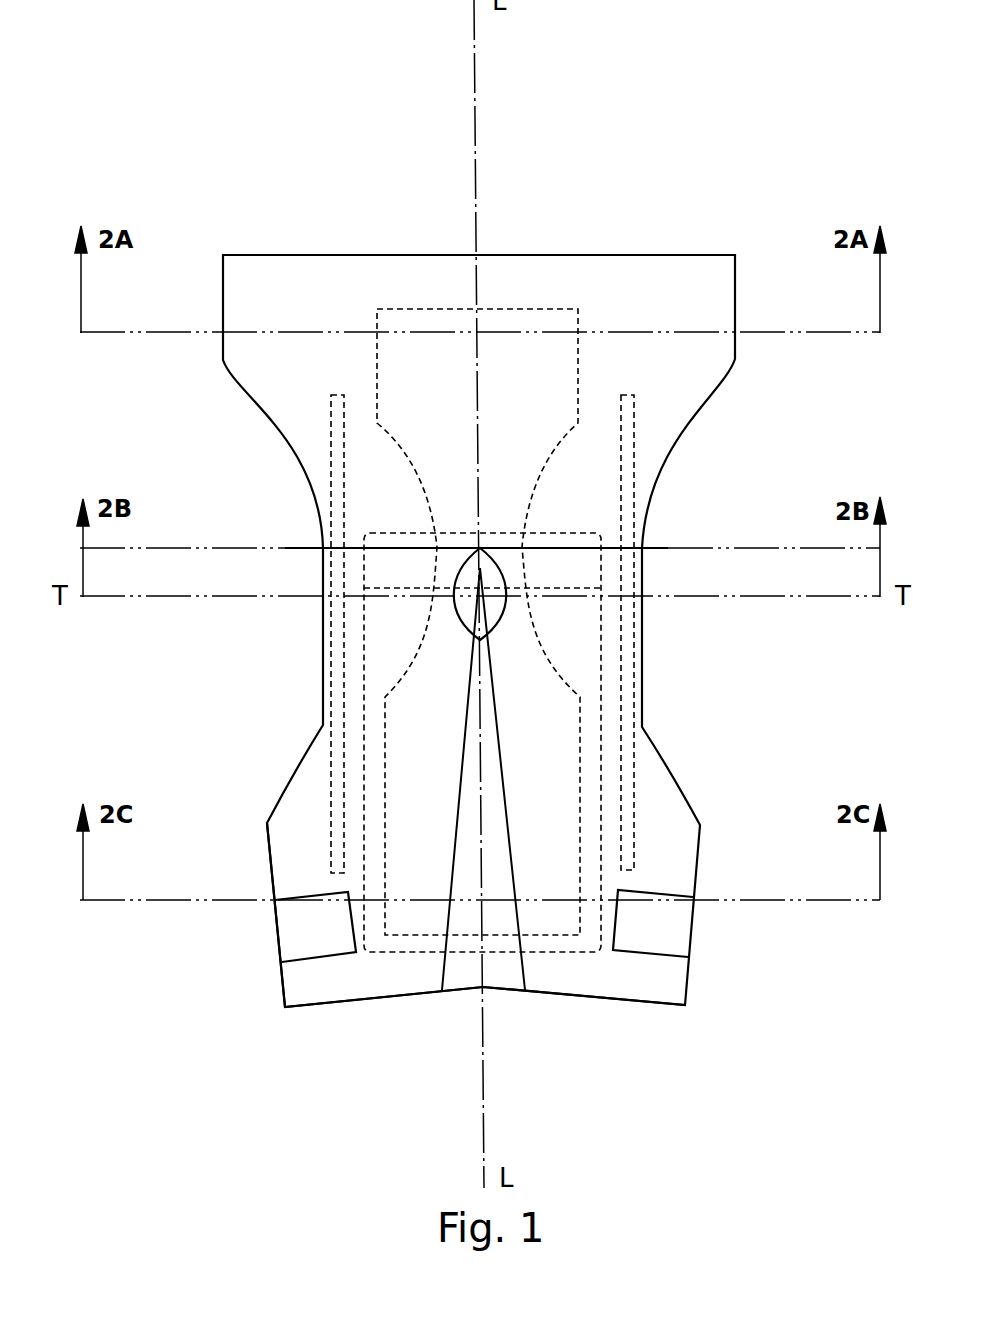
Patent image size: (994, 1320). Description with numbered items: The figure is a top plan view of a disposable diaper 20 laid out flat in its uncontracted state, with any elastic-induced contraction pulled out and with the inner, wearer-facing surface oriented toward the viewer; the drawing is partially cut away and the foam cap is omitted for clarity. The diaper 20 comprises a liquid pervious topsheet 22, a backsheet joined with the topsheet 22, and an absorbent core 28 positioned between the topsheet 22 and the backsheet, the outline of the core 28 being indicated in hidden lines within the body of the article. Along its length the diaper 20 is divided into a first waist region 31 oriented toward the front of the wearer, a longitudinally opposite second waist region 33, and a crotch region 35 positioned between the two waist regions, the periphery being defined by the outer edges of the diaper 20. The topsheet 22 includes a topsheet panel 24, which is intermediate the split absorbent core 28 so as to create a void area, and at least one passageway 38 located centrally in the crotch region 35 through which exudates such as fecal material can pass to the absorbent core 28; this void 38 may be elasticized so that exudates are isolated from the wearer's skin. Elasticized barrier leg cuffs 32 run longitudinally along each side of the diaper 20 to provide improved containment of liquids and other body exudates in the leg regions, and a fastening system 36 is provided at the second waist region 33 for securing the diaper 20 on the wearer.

The diaper 20 is at (195, 499).
The topsheet 22 is at (327, 866).
The topsheet panel 24 is at (515, 877).
The absorbent core 28 is at (383, 807).
The first waist region 31 is at (227, 310).
The elasticized barrier leg cuff 32 is at (331, 487).
The second waist region 33 is at (293, 983).
The crotch region 35 is at (523, 620).
The fastening system 36 is at (293, 931).
The passageway 38 is at (458, 610).